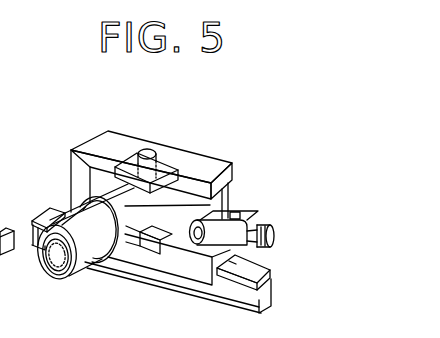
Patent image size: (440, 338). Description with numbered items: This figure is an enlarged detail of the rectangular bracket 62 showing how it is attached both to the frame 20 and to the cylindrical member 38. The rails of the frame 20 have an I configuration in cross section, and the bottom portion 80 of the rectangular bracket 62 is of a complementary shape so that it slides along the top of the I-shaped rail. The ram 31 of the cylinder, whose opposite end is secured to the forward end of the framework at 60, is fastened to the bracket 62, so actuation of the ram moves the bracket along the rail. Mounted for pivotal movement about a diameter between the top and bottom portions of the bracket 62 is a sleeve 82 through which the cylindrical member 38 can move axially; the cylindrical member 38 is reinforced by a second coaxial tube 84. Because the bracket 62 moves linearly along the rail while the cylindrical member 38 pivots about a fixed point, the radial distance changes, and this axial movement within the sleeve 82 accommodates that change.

The rectangular bracket 62 is at (130, 143).
The forward end of the framework 60 is at (0, 226).
The ram 31 is at (262, 228).
The second coaxial tube 84 is at (55, 272).
The cylindrical member 38 is at (88, 267).
The sleeve 82 is at (121, 242).
The bottom portion 80 is at (194, 272).
The frame member 20 is at (227, 293).